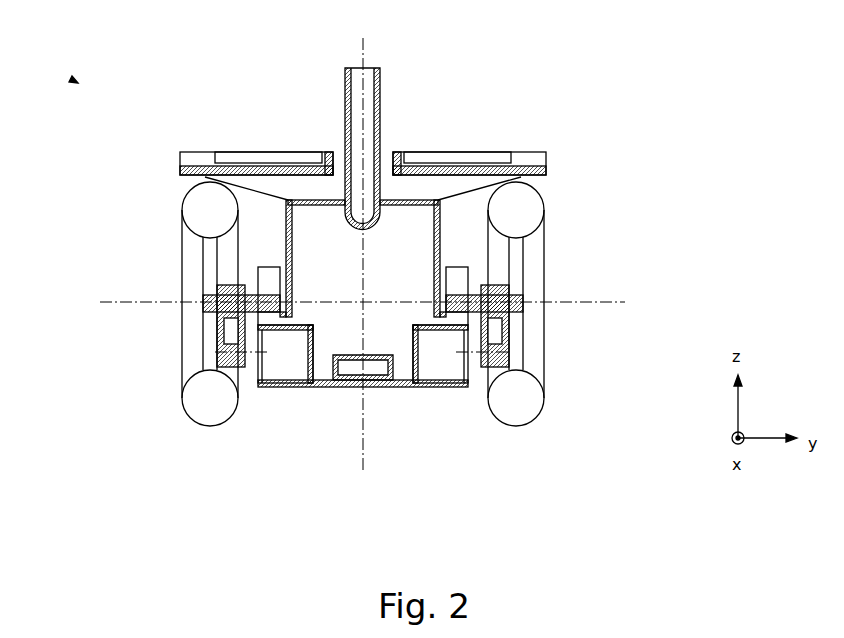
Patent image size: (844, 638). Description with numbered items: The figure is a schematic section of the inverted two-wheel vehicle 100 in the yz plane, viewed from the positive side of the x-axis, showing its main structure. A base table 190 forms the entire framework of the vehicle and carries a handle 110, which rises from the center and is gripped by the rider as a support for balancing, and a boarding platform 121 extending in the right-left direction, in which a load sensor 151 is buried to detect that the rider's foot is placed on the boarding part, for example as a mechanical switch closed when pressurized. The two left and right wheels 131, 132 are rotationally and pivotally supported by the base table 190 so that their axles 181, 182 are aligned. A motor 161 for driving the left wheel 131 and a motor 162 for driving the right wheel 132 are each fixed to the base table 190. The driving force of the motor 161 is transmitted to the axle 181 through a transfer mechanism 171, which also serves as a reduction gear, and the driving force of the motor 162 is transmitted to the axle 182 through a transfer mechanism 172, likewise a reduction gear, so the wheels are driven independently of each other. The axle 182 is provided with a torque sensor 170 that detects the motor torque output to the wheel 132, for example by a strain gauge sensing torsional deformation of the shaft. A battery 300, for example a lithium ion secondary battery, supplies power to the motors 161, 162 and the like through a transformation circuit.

The inverted two-wheel vehicle 100 is at (78, 83).
The handle 110 is at (380, 93).
The boarding platform 121 is at (182, 152).
The load sensor 151 is at (277, 157).
The left wheel 131 is at (540, 410).
The right wheel 132 is at (190, 418).
The torque sensor 170 is at (210, 277).
The transfer mechanism 171 is at (483, 370).
The transfer mechanism 172 is at (237, 368).
The axle 181 is at (474, 300).
The axle 182 is at (247, 300).
The motor 161 is at (430, 367).
The motor 162 is at (293, 367).
The base table 190 is at (390, 387).
The battery 300 is at (355, 372).